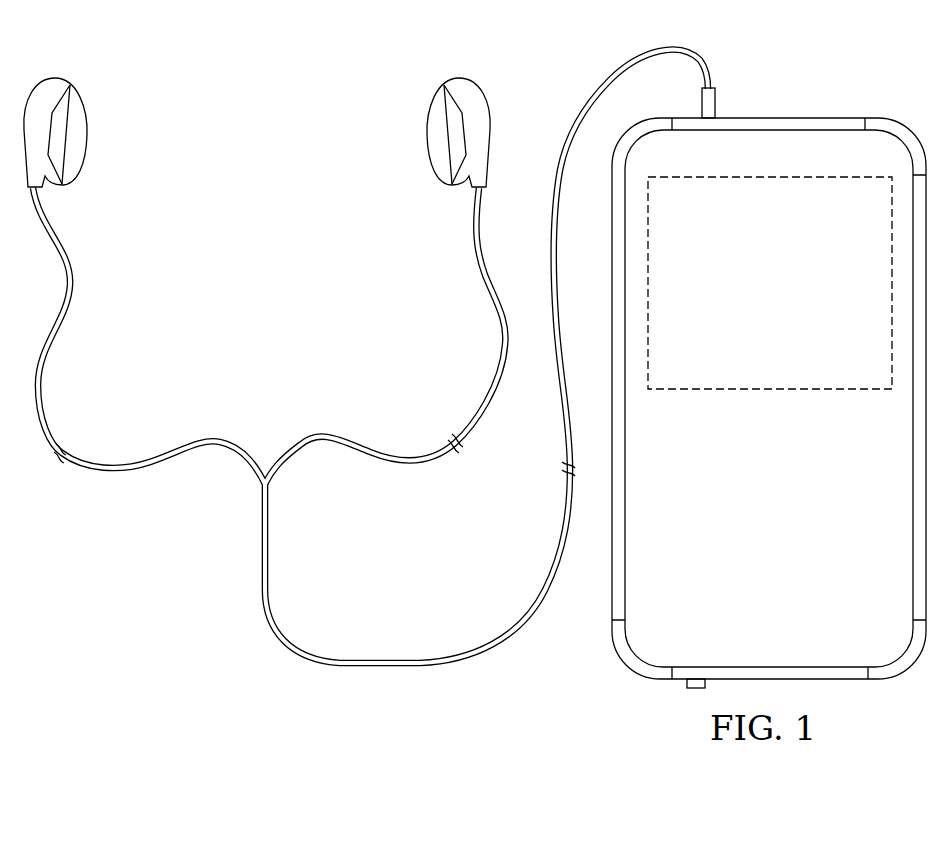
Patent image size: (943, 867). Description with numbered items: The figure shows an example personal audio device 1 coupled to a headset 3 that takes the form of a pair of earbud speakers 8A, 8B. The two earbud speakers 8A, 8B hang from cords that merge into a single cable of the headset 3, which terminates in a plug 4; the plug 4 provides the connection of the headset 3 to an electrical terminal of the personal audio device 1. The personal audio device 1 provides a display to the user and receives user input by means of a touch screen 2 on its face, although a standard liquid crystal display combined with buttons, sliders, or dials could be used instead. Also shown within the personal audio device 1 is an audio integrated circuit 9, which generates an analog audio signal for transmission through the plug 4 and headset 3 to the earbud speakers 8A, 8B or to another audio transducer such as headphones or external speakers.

The personal audio device 1 is at (851, 117).
The touch screen 2 is at (776, 563).
The headset 3 is at (211, 440).
The plug 4 is at (716, 110).
The earbud speaker 8A is at (454, 78).
The earbud speaker 8B is at (60, 78).
The audio integrated circuit 9 is at (790, 392).